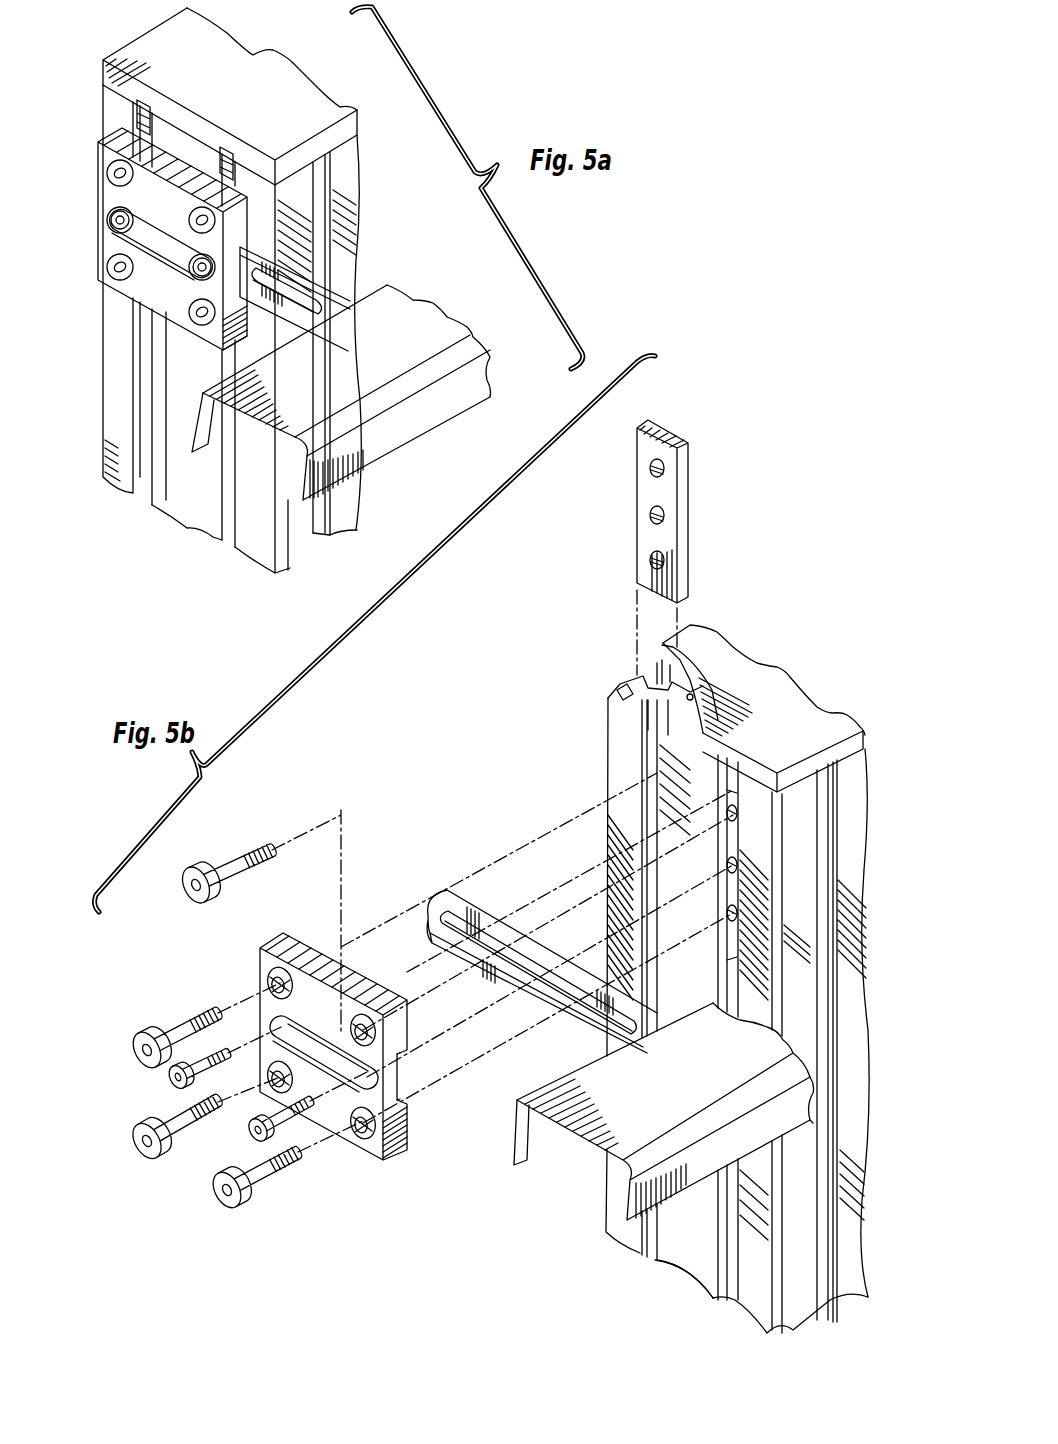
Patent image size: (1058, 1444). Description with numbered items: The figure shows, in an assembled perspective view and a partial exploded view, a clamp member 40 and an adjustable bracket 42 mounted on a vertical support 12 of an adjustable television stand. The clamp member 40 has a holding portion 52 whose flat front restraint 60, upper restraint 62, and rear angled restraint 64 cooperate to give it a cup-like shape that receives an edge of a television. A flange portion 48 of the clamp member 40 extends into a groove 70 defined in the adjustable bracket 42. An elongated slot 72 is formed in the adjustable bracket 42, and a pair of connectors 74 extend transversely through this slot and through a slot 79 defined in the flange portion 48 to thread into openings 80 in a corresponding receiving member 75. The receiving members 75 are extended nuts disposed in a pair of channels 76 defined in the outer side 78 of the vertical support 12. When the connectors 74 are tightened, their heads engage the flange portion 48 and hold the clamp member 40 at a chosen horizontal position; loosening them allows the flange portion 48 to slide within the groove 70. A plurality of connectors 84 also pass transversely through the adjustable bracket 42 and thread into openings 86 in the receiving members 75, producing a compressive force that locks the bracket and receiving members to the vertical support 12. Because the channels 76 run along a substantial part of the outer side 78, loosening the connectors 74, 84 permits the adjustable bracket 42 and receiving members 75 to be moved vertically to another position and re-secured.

In FIG. 5a, the vertical support 12 is at (200, 291).
In FIG. 5a, the clamp member 40 is at (332, 435).
In FIG. 5a, the adjustable bracket 42 is at (142, 225).
In FIG. 5b, the adjustable bracket 42 is at (366, 1022).
In FIG. 5a, the flange portion 48 is at (310, 311).
In FIG. 5b, the flange portion 48 is at (558, 991).
In FIG. 5a, the holding portion 52 is at (418, 427).
In FIG. 5a, the flat front restraint 60 is at (306, 548).
In FIG. 5a, the upper restraint 62 is at (292, 432).
In FIG. 5a, the rear angled restraint 64 is at (207, 443).
In FIG. 5b, the groove 70 is at (410, 1062).
In FIG. 5a, the elongated slot 72 is at (165, 238).
In FIG. 5b, the elongated slot 72 is at (314, 1040).
In FIG. 5a, the connectors 74 is at (108, 219).
In FIG. 5b, the connectors 74 is at (171, 1086).
In FIG. 5b, the receiving members 75 is at (698, 672).
In FIG. 5a, the channels 76 is at (147, 369).
In FIG. 5b, the channels 76 is at (650, 987).
In FIG. 5a, the outer side 78 is at (170, 430).
In FIG. 5b, the outer side 78 is at (680, 1262).
In FIG. 5a, the slot 79 is at (318, 322).
In FIG. 5b, the slot 79 is at (590, 1025).
In FIG. 5b, the openings 80 is at (650, 516).
In FIG. 5a, the connectors 84 is at (108, 167).
In FIG. 5b, the connectors 84 is at (226, 864).
In FIG. 5b, the openings 86 is at (650, 470).